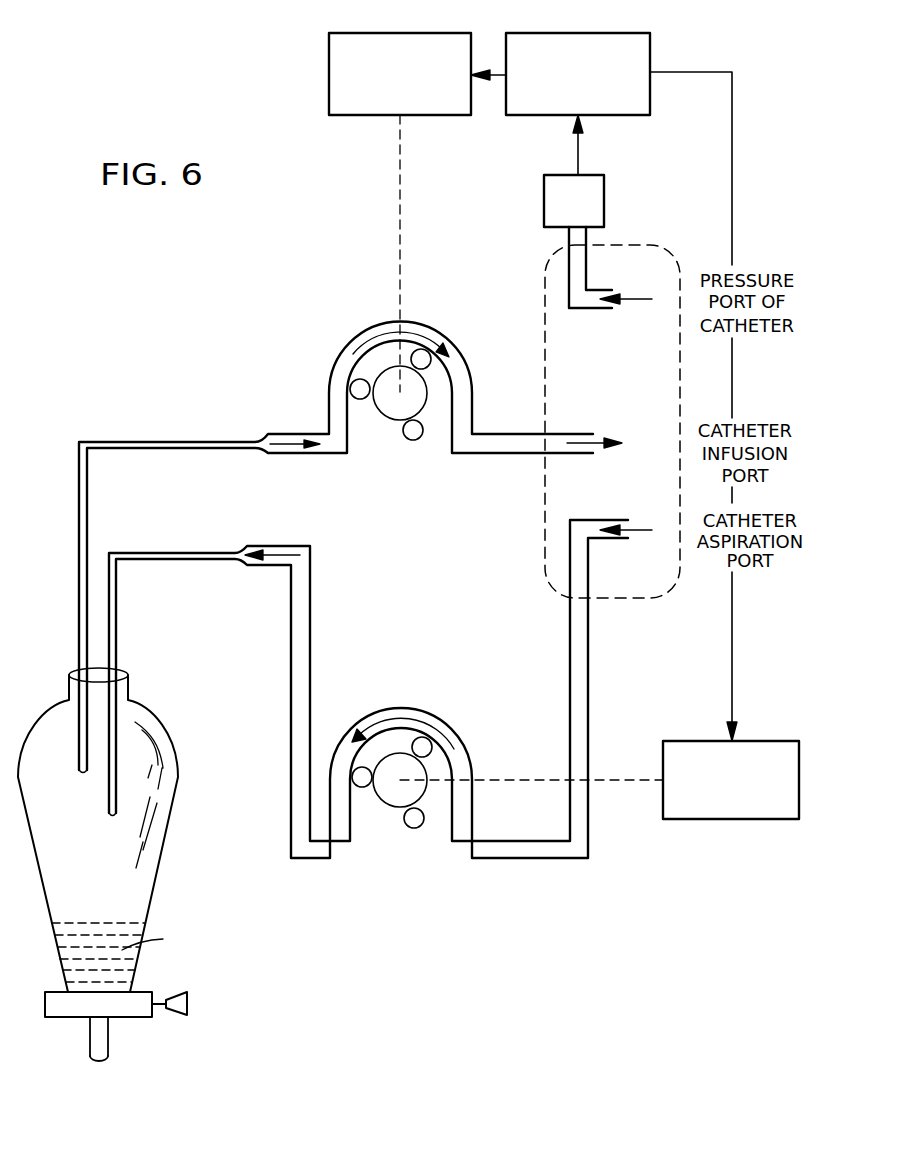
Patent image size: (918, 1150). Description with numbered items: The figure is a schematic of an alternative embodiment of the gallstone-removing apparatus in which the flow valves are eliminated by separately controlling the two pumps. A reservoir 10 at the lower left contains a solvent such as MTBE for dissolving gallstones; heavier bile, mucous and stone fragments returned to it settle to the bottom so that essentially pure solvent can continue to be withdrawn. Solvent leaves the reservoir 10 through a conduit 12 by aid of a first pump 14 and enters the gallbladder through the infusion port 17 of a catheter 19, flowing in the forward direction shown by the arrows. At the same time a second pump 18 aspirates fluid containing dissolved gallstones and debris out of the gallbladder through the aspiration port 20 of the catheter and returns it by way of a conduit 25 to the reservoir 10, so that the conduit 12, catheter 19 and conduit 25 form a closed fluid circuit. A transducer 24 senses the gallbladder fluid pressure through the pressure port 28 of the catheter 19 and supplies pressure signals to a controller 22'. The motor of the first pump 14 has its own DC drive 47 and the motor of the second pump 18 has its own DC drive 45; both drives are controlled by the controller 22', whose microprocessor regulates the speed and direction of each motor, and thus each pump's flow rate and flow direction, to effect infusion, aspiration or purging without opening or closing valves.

The reservoir 10 is at (160, 706).
The conduit 12 is at (112, 442).
The first pump 14 is at (390, 407).
The infusion port 17 is at (571, 433).
The second pump 18 is at (388, 793).
The catheter 19 is at (546, 284).
The aspiration port 20 is at (594, 541).
The controller 22' is at (604, 372).
The transducer 24 is at (580, 175).
The conduit 25 is at (291, 757).
The pressure port 28 is at (595, 289).
The DC drive 45 is at (705, 819).
The DC drive 47 is at (368, 33).